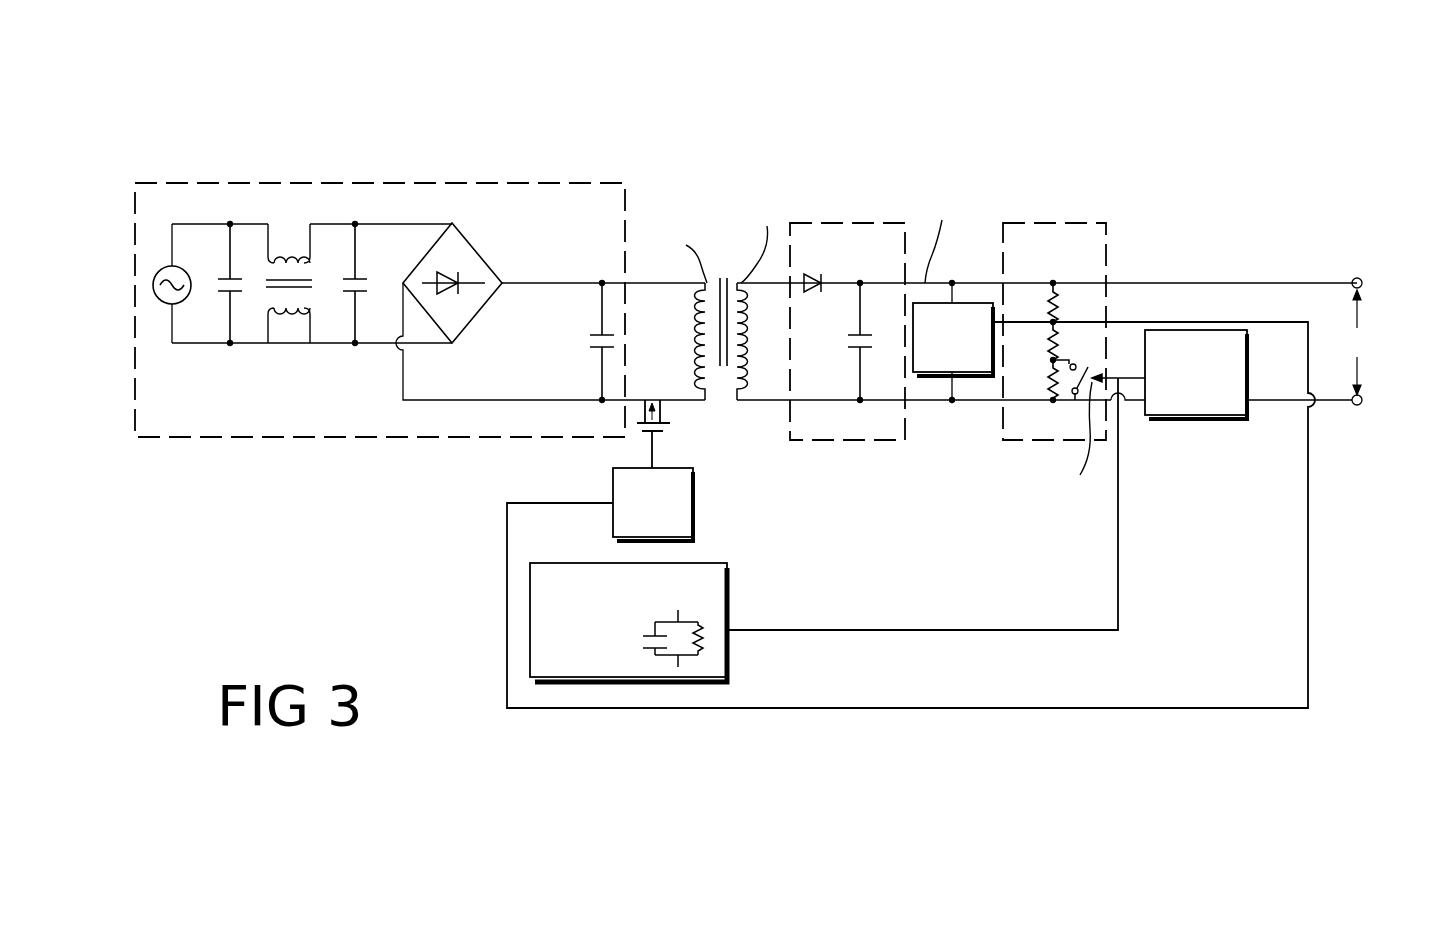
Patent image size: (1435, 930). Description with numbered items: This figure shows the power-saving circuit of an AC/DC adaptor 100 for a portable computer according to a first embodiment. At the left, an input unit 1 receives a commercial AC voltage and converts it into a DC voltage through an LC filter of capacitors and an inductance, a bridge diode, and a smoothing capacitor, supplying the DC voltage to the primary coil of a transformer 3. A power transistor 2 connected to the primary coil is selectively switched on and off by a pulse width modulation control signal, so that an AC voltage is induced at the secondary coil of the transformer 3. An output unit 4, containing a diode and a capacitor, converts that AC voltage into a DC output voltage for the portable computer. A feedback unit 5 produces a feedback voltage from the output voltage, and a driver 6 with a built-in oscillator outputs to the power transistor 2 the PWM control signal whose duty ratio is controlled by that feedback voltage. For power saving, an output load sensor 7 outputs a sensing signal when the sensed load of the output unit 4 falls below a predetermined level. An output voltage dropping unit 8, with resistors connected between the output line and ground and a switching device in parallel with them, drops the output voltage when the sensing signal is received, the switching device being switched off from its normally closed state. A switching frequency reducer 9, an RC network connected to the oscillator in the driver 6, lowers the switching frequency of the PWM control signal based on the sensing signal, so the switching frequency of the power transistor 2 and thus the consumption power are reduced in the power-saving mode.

The AC/DC adaptor 100 is at (786, 124).
The input unit 1 is at (413, 183).
The power transistor 2 is at (670, 425).
The transformer 3 is at (733, 280).
The output unit 4 is at (848, 223).
The feedback unit 5 is at (967, 303).
The driver 6 is at (695, 485).
The output load sensor 7 is at (1183, 417).
The output voltage dropping unit 8 is at (1062, 223).
The switching frequency reducer 9 is at (733, 612).